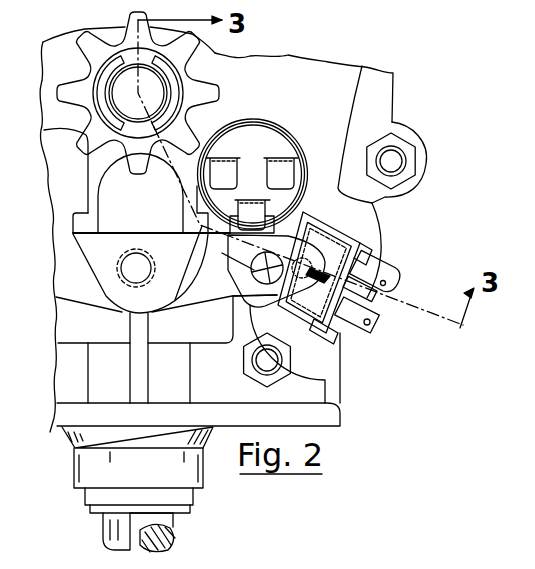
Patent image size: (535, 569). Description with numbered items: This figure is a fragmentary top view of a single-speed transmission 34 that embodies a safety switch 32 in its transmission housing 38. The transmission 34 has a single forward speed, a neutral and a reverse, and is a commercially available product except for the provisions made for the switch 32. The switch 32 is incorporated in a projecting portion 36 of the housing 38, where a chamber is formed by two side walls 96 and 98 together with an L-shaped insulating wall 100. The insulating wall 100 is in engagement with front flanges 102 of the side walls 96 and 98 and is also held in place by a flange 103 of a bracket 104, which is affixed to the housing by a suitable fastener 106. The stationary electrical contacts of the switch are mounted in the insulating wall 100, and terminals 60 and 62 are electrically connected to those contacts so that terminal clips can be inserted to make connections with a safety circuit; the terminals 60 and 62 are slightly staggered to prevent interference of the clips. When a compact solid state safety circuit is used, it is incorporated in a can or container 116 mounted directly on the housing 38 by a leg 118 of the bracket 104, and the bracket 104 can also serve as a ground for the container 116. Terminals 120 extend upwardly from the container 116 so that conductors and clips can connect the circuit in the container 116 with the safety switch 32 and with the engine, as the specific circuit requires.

The single-speed transmission 34 is at (400, 90).
The transmission housing 38 is at (362, 112).
The projecting portion 36 is at (340, 218).
The container 116 is at (226, 130).
The terminals 120 is at (250, 200).
The leg 118 is at (252, 242).
The fastener 106 is at (252, 262).
The bracket 104 is at (233, 278).
The flange 103 is at (266, 319).
The side wall 98 is at (368, 222).
The front flanges 102 is at (372, 243).
The terminal 62 is at (390, 263).
The insulating wall 100 is at (380, 298).
The terminal 60 is at (375, 334).
The safety switch 32 is at (384, 308).
The side wall 96 is at (327, 398).